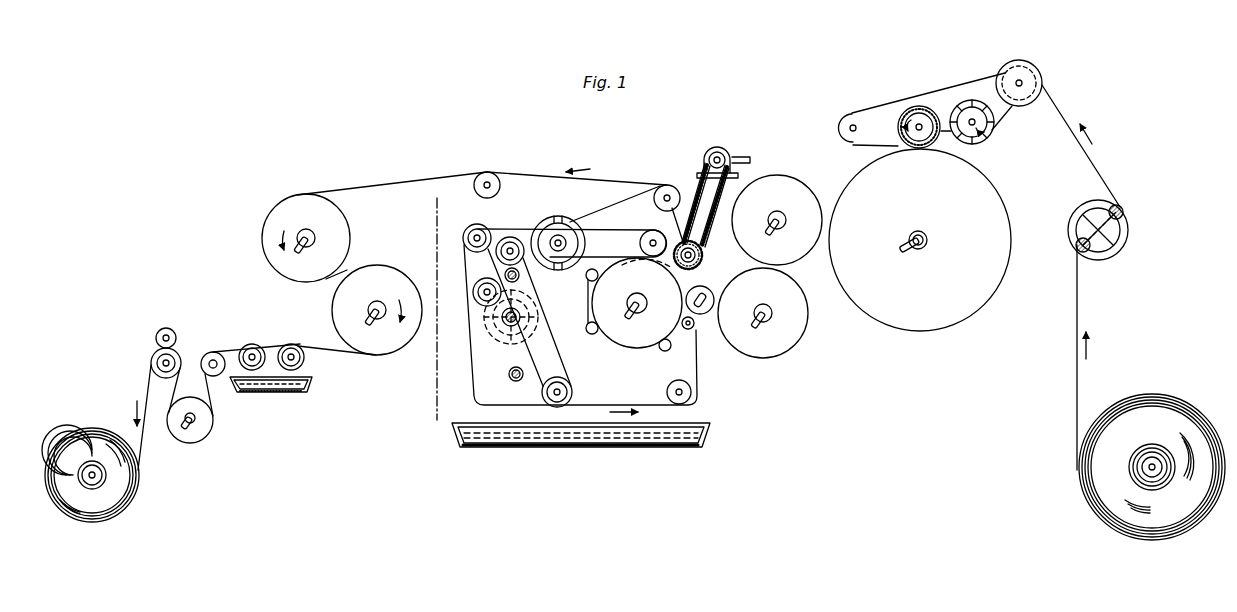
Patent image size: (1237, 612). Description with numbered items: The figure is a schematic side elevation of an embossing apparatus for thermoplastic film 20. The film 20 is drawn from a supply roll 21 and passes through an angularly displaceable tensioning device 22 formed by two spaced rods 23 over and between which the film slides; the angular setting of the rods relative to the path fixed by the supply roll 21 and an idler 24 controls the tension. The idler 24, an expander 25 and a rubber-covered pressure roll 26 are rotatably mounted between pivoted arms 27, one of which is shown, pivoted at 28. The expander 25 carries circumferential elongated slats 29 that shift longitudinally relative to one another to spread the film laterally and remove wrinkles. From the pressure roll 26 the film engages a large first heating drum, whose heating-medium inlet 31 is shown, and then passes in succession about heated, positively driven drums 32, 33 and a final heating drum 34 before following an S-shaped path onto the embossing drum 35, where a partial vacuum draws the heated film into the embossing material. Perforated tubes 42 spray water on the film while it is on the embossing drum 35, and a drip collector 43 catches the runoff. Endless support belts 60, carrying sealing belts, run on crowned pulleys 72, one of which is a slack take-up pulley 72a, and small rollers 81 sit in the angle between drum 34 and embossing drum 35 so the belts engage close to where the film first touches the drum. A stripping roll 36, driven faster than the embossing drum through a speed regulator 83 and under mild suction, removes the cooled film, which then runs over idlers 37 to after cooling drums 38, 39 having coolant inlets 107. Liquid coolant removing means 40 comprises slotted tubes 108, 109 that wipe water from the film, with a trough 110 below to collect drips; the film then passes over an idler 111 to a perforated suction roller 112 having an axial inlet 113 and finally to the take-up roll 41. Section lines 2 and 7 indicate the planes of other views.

The section line 2- 2 is at (618, 243).
The section line 7- 7 is at (451, 213).
The thermoplastic film 20 is at (408, 180).
The supply roll 21 is at (1079, 498).
The tensioning device 22 is at (1130, 225).
The spaced rods 23 is at (1120, 210).
The idler 24 is at (1033, 73).
The expander 25 is at (974, 110).
The pressure roll 26 is at (921, 112).
The pivoted arms 27 is at (888, 118).
The pivot 28 is at (853, 123).
The elongated slats 29 is at (990, 143).
The inlet 31 is at (911, 253).
The drum 32 is at (793, 195).
The drum 33 is at (792, 320).
The drum 34 is at (705, 290).
The embossing drum 35 is at (620, 327).
The stripping roll 36 is at (702, 257).
The idlers 37 is at (490, 175).
The cooling drum 38 is at (297, 205).
The cooling drum 39 is at (377, 277).
The liquid coolant removing means 40 is at (187, 318).
The take-up roll 41 is at (123, 495).
The perforated tubes 42 is at (590, 279).
The drip collector 43 is at (583, 447).
The endless support belts 60 is at (540, 350).
The crowned pulleys 72 is at (509, 247).
The tensioning pulley 72a is at (483, 303).
The rollers 81 is at (693, 328).
The speed regulator 83 is at (718, 153).
The inlets 107 is at (297, 250).
The slotted tube 108 is at (304, 358).
The slotted tube 109 is at (256, 350).
The trough 110 is at (305, 395).
The idler 111 is at (215, 354).
The perforated suction roller 112 is at (203, 422).
The axial inlet 113 is at (190, 430).